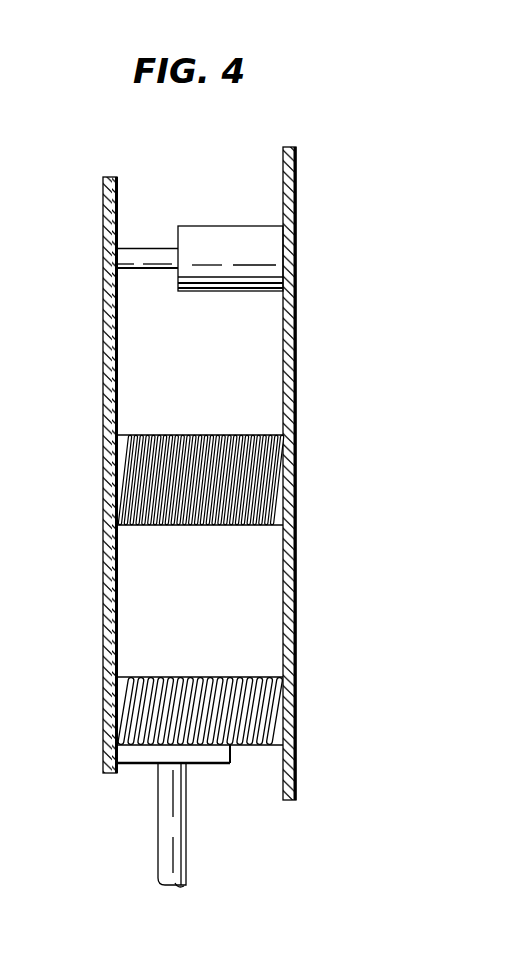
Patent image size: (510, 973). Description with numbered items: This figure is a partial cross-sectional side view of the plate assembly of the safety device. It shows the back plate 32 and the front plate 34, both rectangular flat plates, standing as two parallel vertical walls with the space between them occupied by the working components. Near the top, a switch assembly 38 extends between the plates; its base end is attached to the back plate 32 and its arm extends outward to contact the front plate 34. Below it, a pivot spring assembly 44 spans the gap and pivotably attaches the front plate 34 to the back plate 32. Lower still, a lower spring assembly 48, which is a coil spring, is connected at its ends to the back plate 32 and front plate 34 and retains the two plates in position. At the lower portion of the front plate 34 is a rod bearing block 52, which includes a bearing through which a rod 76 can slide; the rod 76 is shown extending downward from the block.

The back plate 32 is at (296, 368).
The front plate 34 is at (103, 349).
The switch assembly 38 is at (236, 233).
The pivot spring assembly 44 is at (203, 445).
The lower spring assembly 48 is at (228, 693).
The rod bearing block 52 is at (208, 753).
The rod 76 is at (180, 864).